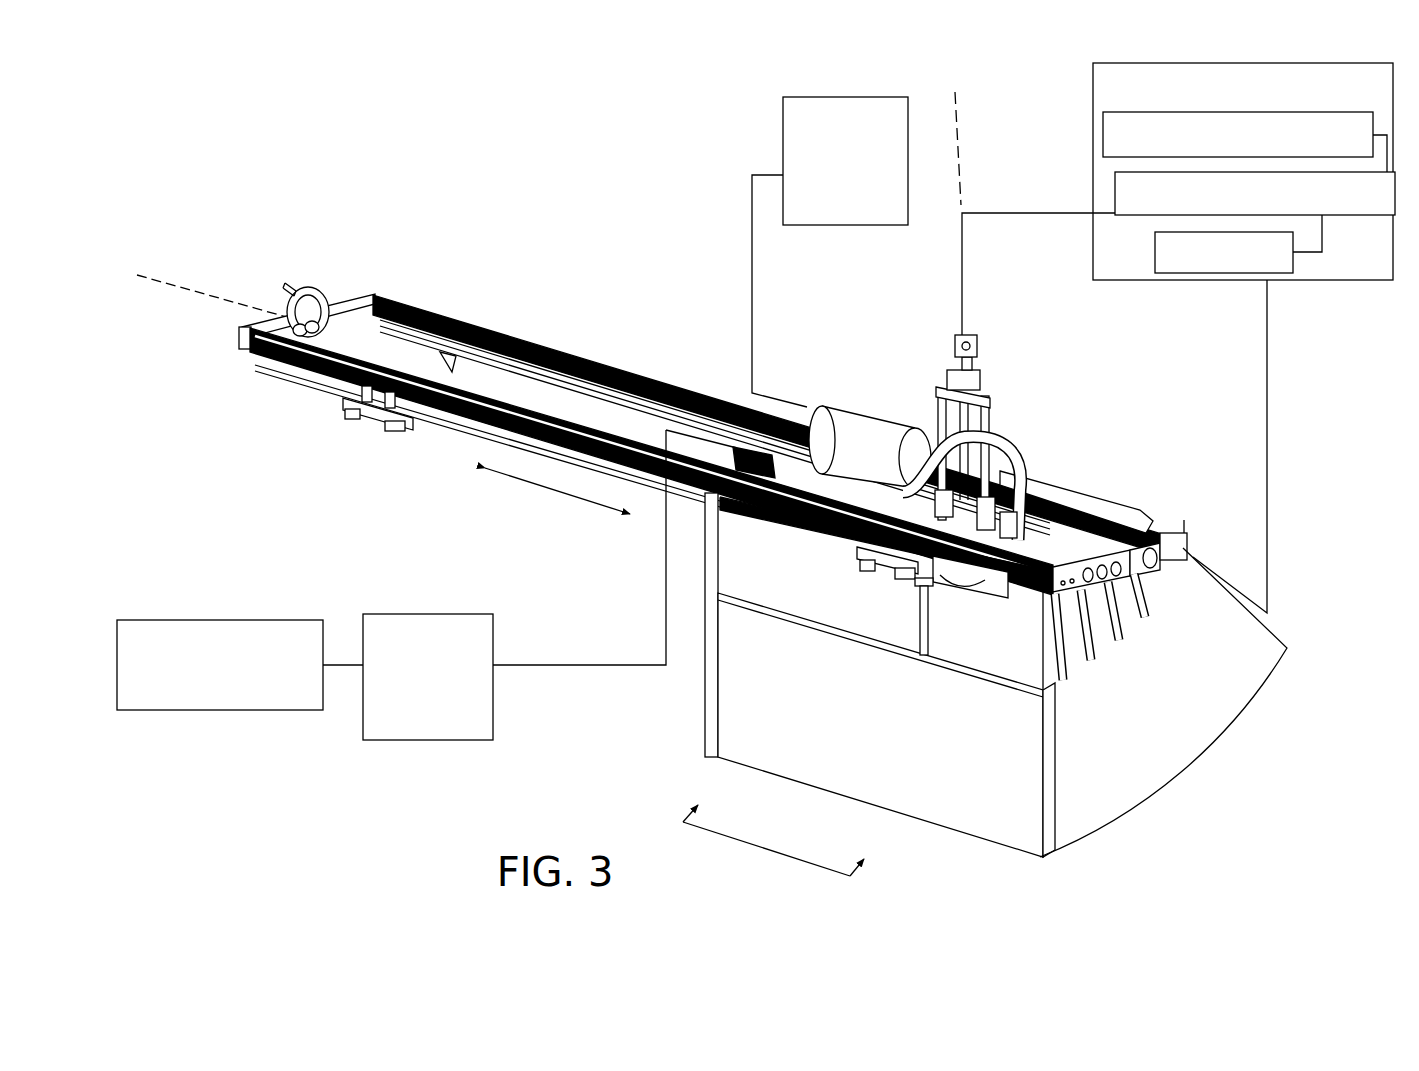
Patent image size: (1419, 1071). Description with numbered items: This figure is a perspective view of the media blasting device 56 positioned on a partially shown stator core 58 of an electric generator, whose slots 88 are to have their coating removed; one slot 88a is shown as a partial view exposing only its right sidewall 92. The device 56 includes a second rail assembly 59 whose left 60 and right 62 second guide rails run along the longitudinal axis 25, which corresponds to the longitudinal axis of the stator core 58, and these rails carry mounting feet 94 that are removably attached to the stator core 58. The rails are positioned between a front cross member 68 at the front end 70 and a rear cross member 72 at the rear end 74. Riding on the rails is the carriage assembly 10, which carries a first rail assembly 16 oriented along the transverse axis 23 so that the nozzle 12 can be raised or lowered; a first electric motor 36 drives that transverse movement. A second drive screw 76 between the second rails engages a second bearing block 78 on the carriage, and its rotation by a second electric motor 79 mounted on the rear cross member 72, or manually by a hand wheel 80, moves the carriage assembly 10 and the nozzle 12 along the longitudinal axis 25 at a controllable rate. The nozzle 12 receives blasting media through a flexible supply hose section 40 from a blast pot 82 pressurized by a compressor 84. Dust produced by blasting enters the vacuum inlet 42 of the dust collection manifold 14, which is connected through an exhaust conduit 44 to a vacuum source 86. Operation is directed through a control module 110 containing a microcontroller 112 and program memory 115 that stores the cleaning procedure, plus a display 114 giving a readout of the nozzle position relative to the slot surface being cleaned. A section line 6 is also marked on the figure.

The section line 6 is at (778, 828).
The carriage assembly 10 is at (995, 356).
The nozzle 12 is at (943, 587).
The dust collection manifold 14 is at (853, 603).
The first rail assembly 16 is at (924, 407).
The transverse axis 23 is at (955, 92).
The longitudinal axis 25 is at (160, 268).
The first electric motor 36 is at (955, 333).
The supply hose section 40 is at (1003, 450).
The vacuum inlet 42 is at (928, 610).
The exhaust conduit 44 is at (822, 408).
The media blasting device 56 is at (590, 178).
The stator core 58 is at (1097, 815).
The second rail assembly 59 is at (540, 338).
The left second guide rail 60 is at (302, 392).
The right second guide rail 62 is at (437, 298).
The front cross member 68 is at (240, 340).
The front end 70 is at (336, 275).
The rear cross member 72 is at (1107, 505).
The rear end 74 is at (1192, 526).
The second drive screw 76 is at (627, 373).
The second bearing block 78 is at (1050, 480).
The second electric motor 79 is at (1253, 698).
The hand wheel 80 is at (300, 290).
The blast pot 82 is at (455, 742).
The compressor 84 is at (160, 712).
The vacuum source 86 is at (783, 150).
The slots 88 is at (1075, 663).
The slot 88a is at (1045, 680).
The right sidewall 92 is at (1010, 665).
The mounting feet 94 is at (405, 436).
The control module 110 is at (1093, 84).
The microcontroller 112 is at (1115, 196).
The display 114 is at (1293, 262).
The program memory 115 is at (1103, 142).